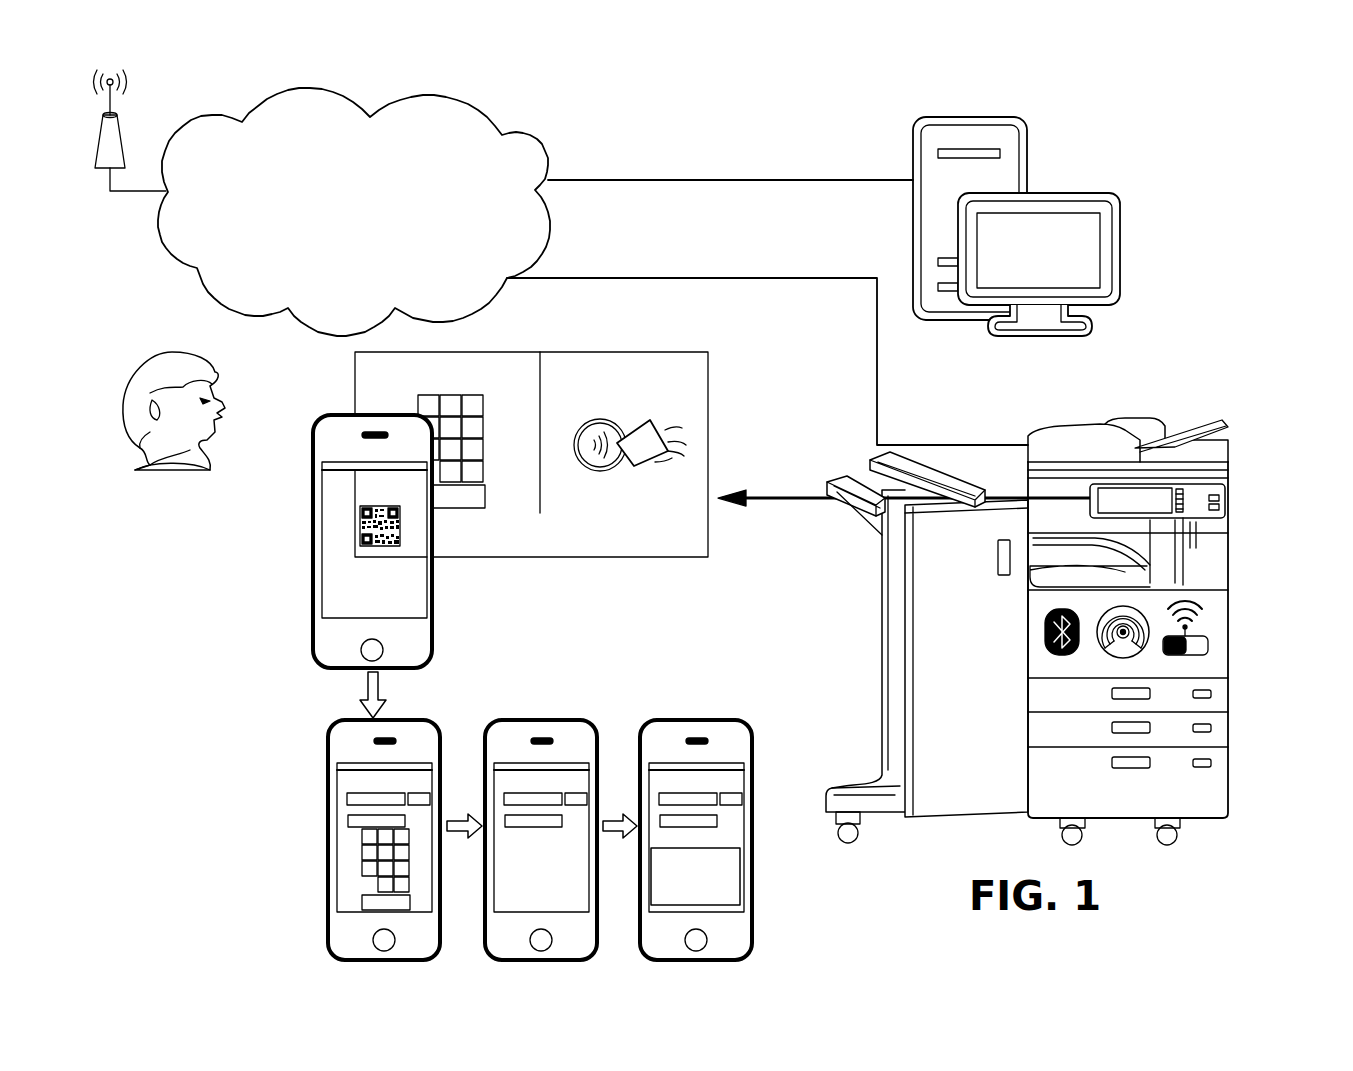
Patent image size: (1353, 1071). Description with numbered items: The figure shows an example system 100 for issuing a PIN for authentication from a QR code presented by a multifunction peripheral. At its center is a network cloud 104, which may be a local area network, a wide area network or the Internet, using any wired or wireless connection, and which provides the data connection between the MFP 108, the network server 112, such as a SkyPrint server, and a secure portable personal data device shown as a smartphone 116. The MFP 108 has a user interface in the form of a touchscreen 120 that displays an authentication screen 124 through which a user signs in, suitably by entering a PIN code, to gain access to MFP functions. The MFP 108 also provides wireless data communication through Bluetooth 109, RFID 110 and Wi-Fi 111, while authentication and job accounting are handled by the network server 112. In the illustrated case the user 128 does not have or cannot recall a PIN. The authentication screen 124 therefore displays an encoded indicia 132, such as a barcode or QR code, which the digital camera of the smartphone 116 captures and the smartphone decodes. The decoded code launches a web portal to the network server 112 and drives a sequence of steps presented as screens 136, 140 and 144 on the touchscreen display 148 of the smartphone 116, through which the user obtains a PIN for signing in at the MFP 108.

The secure printing system 100 is at (1108, 140).
The network cloud 104 is at (530, 142).
The MFP 108 is at (1228, 541).
The Bluetooth 109 is at (1048, 651).
The RFID 110 is at (1140, 652).
The Wi-Fi 111 is at (1210, 648).
The network server 112 is at (1120, 247).
The smartphone 116 is at (434, 633).
The touchscreen 120 is at (1155, 498).
The authentication screen 124 is at (708, 450).
The user 128 is at (222, 404).
The encoded indicia 132 is at (360, 518).
The screen 136 is at (440, 720).
The screen 140 is at (596, 720).
The screen 144 is at (750, 720).
The touchscreen display 148 is at (350, 612).